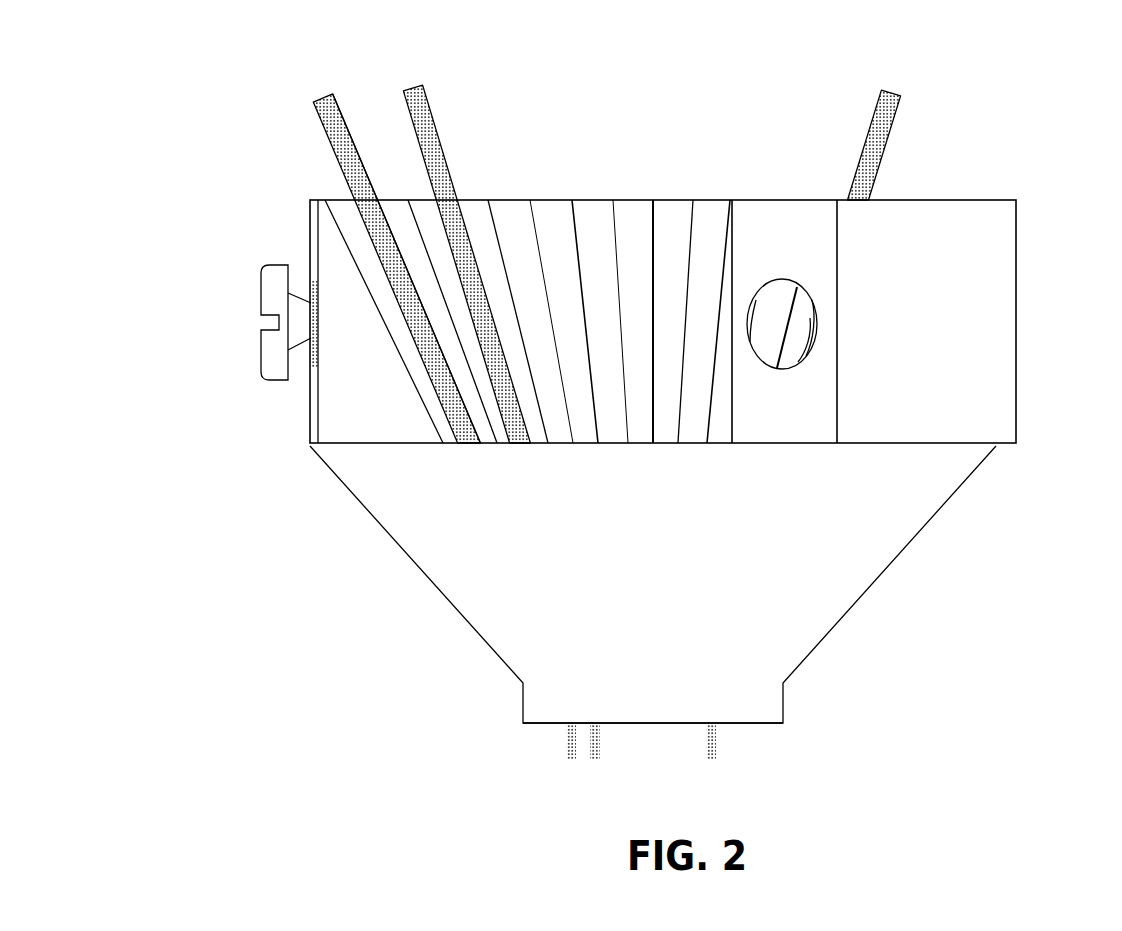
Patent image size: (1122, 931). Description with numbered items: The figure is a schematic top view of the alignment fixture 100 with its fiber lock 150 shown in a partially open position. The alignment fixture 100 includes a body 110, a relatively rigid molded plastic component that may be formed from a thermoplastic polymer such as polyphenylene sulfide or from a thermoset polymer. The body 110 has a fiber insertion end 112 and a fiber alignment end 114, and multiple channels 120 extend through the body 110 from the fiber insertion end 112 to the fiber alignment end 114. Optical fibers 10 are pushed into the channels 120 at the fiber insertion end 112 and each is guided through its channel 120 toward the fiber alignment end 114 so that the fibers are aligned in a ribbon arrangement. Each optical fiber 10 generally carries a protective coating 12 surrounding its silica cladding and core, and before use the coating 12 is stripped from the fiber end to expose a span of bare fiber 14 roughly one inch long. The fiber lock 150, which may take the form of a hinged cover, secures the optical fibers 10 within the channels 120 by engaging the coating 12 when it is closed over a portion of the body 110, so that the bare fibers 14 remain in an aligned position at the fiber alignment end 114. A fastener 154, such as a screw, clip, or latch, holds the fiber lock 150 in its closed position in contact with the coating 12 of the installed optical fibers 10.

The alignment fixture 100 is at (240, 96).
The optical fibers 10 is at (316, 133).
The protective coating 12 is at (353, 183).
The bare fiber 14 is at (568, 746).
The body 110 is at (912, 518).
The fiber insertion end 112 is at (1010, 185).
The fiber alignment end 114 is at (760, 736).
The channels 120 is at (675, 185).
The fiber lock 150 is at (960, 329).
The fastener 154 is at (268, 283).